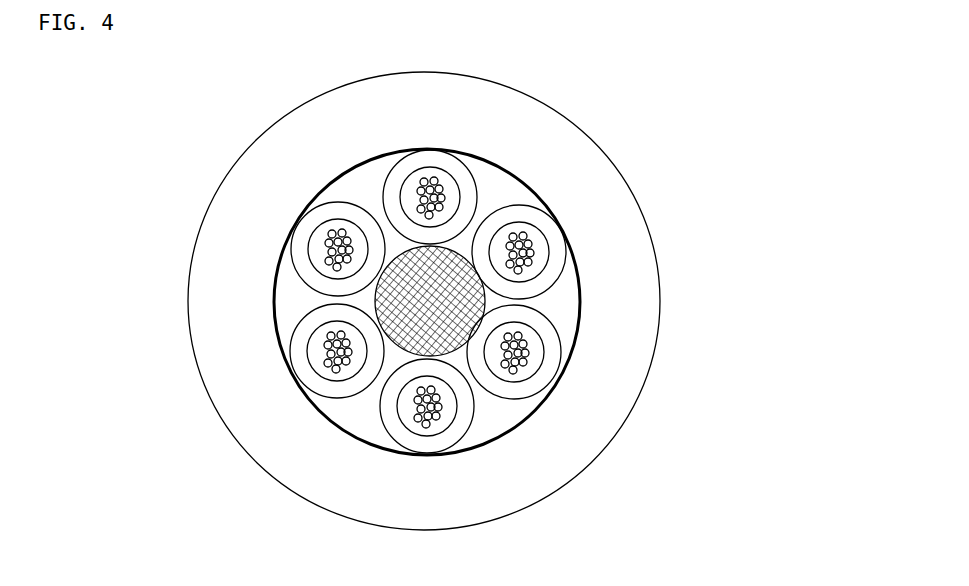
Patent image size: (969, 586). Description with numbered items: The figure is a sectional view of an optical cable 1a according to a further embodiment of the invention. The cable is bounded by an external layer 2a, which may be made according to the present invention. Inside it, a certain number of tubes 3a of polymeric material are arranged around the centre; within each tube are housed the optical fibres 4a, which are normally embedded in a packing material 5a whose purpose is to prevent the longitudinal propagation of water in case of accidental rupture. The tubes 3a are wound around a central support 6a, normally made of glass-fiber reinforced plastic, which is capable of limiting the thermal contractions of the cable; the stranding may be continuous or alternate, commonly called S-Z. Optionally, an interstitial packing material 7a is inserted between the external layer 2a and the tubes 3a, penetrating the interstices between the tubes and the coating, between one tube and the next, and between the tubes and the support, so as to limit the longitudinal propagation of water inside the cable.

The optical cable 1a is at (218, 175).
The external layer 2a is at (583, 184).
The tubes 3a is at (467, 182).
The optical fibres 4a is at (532, 353).
The packing material 5a is at (525, 332).
The central support 6a is at (485, 278).
The interstitial packing material 7a is at (485, 413).